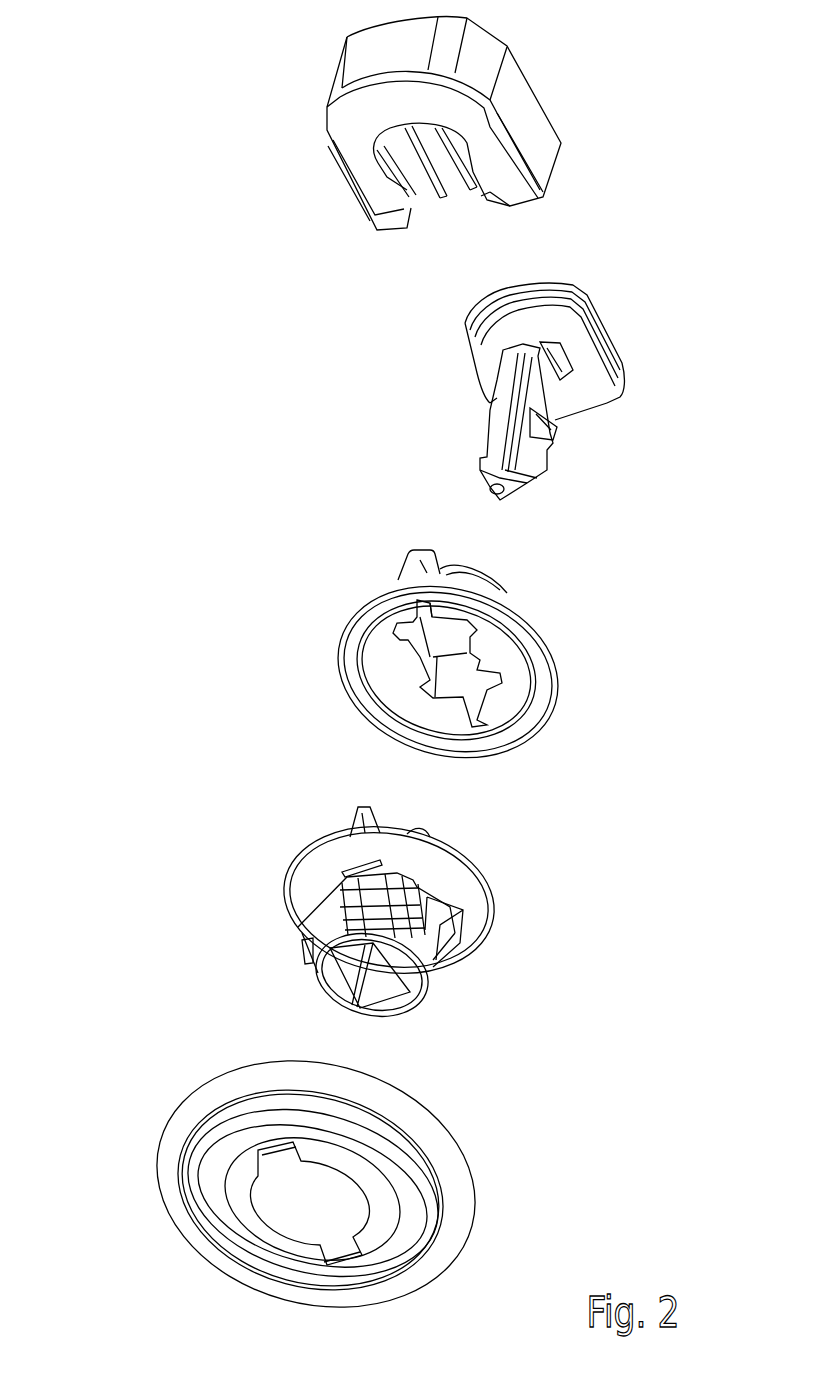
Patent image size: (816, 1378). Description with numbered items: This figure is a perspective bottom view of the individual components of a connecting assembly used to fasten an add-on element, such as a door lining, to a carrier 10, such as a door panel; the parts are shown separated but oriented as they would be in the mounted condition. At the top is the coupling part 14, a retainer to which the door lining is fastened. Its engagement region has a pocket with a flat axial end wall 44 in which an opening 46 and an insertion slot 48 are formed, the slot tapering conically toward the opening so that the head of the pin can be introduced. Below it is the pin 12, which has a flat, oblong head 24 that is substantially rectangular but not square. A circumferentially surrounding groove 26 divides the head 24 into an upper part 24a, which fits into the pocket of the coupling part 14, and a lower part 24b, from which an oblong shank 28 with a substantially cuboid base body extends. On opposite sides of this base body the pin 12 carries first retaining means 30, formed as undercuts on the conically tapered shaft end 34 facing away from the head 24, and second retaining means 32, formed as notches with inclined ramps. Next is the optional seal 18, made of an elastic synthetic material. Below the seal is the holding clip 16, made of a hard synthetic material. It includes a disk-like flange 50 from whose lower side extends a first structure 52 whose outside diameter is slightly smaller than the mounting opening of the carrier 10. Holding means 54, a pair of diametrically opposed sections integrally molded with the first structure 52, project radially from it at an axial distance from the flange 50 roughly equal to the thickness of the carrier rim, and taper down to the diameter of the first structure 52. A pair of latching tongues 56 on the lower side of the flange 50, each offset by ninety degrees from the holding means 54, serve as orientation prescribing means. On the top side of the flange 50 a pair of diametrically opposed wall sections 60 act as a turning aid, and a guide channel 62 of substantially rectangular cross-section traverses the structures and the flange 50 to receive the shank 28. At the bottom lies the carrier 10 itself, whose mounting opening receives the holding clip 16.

The carrier 10 is at (143, 1127).
The pin 12 is at (444, 375).
The coupling part 14 is at (298, 77).
The holding clip 16 is at (278, 870).
The seal 18 is at (328, 643).
The head 24 is at (610, 310).
The upper part 24a is at (613, 331).
The lower part 24b is at (610, 387).
The groove 26 is at (580, 301).
The shank 28 is at (560, 423).
The first retaining means 30 is at (480, 447).
The second retaining means 32 is at (553, 377).
The shaft end 34 is at (527, 477).
The axial end wall 44 is at (357, 143).
The opening 46 is at (470, 157).
The insertion slot 48 is at (490, 197).
The flange 50 is at (477, 863).
The first structure 52 is at (333, 903).
The holding means 54 is at (457, 947).
The latching tongues 56 is at (373, 857).
The wall sections 60 is at (357, 813).
The guide channel 62 is at (387, 990).